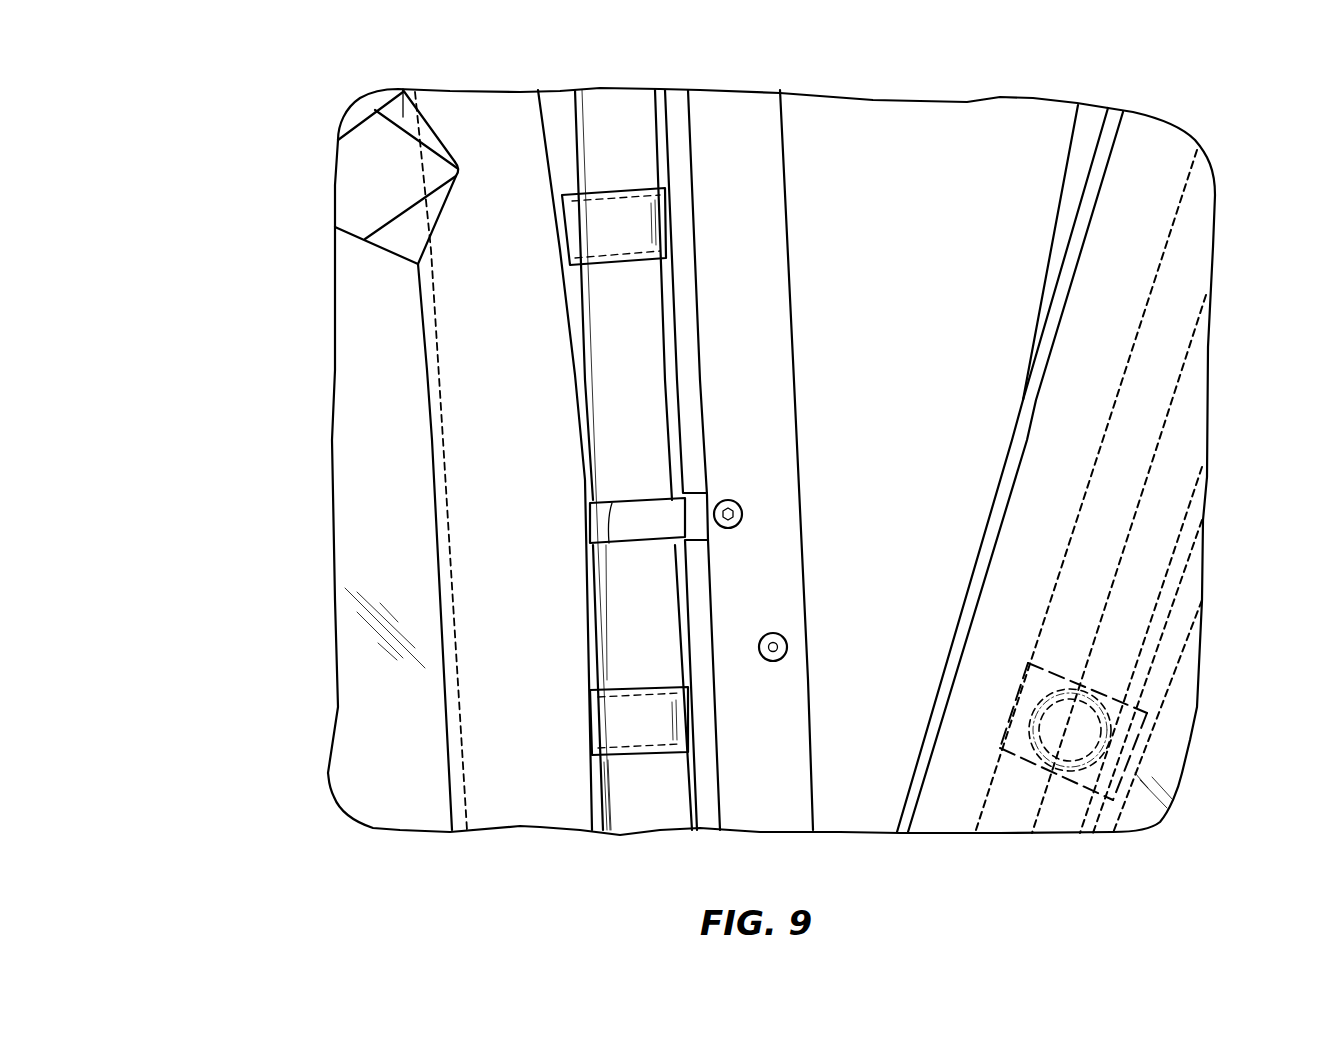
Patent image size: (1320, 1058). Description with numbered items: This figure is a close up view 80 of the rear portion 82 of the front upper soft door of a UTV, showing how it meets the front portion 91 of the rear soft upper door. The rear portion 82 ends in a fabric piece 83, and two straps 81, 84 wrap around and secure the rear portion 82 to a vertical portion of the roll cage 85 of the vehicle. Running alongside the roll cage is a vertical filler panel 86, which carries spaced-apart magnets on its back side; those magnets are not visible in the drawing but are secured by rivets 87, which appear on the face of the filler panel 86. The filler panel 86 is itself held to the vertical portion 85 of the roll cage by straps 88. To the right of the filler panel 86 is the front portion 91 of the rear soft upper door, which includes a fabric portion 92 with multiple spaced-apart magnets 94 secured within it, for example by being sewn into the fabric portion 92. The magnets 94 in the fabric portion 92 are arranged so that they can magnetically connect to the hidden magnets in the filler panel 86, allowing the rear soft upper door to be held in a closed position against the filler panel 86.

The close up view 80 is at (297, 93).
The strap 81 is at (637, 740).
The rear portion 82 is at (362, 476).
The fabric piece 83 is at (493, 130).
The strap 84 is at (620, 213).
The vertical portion of the roll cage 85 is at (657, 162).
The vertical filler panel 86 is at (772, 202).
The rivets 87 is at (772, 661).
The straps 88 is at (640, 530).
The front portion 91 is at (1207, 420).
The fabric portion 92 is at (1177, 587).
The magnets 94 is at (1107, 728).